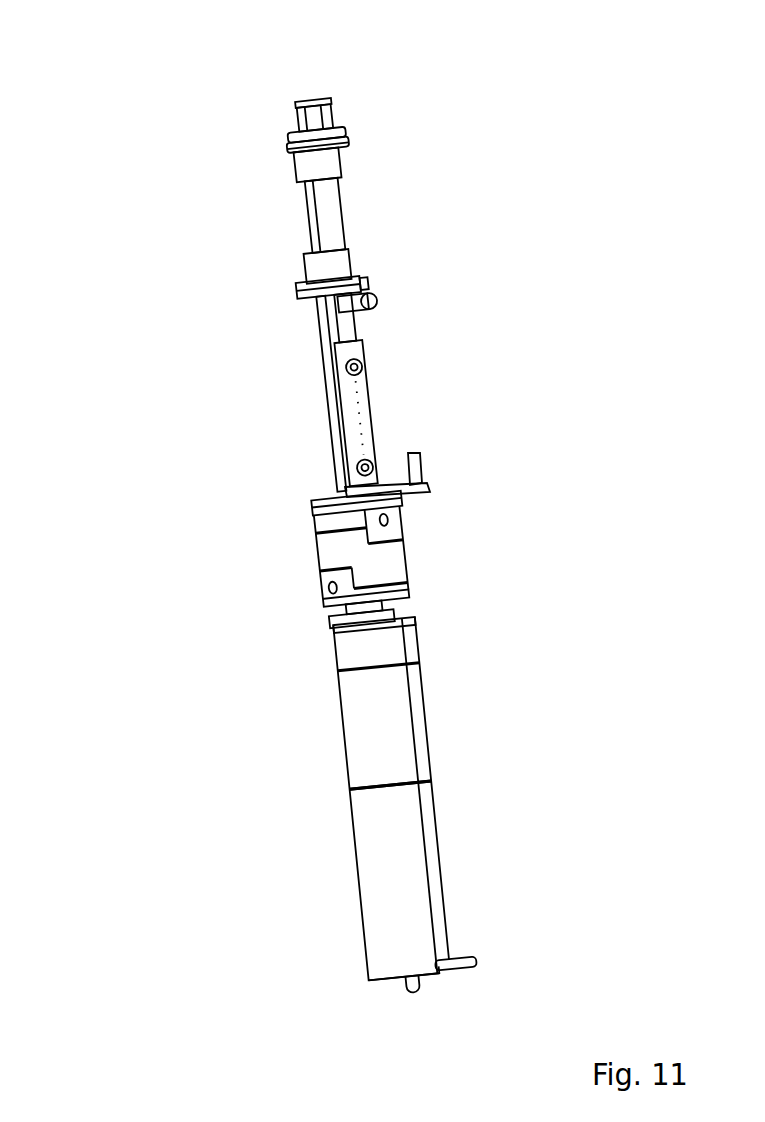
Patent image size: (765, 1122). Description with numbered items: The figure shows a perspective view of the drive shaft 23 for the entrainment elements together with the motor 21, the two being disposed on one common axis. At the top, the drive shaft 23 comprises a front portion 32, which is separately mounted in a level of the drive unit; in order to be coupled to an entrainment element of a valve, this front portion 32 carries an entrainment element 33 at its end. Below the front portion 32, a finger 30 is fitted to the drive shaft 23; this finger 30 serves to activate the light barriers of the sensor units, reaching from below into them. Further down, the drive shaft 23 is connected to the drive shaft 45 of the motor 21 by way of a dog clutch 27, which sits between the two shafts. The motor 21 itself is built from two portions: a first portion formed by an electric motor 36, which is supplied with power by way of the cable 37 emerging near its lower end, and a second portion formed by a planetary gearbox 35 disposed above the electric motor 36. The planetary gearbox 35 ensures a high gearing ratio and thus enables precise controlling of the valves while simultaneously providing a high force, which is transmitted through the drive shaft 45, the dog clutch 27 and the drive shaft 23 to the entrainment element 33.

The motor 21 is at (392, 769).
The drive shaft 23 is at (210, 329).
The dog clutch 27 is at (355, 545).
The finger 30 is at (395, 485).
The front portion 32 is at (317, 227).
The entrainment element 33 is at (310, 98).
The planetary gearbox 35 is at (395, 690).
The electric motor 36 is at (415, 863).
The cable 37 is at (468, 962).
The drive shaft of the motor 45 is at (402, 600).